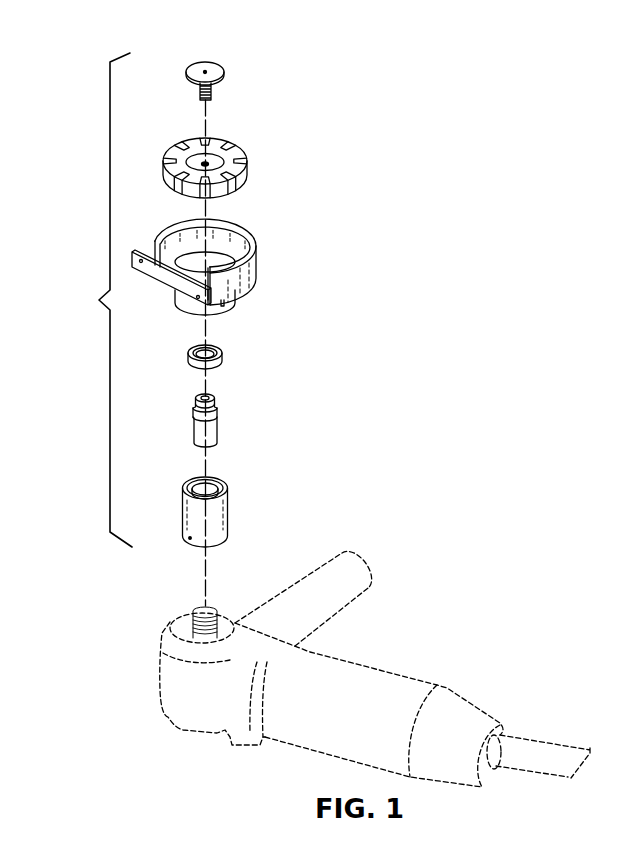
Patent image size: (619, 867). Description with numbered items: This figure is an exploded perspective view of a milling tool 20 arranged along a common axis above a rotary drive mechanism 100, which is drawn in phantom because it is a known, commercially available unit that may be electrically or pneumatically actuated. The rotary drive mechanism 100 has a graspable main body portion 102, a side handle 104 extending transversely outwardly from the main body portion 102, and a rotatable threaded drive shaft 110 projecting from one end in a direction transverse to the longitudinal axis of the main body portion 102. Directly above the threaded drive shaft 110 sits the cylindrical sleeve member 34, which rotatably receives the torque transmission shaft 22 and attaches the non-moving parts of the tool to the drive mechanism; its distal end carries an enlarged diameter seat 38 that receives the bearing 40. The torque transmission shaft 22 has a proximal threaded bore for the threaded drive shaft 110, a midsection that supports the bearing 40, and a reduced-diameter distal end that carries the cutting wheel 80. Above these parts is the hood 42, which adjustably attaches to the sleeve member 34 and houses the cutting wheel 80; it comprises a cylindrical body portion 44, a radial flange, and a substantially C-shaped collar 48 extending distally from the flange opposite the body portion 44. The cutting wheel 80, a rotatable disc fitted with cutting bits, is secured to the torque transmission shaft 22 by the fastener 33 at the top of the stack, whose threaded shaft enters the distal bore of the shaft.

The milling tool 20 is at (89, 300).
The fastener 33 is at (226, 64).
The cutting wheel 80 is at (257, 151).
The hood 42 is at (229, 268).
The C-shaped collar 48 is at (254, 232).
The cylindrical body portion 44 is at (235, 306).
The bearing 40 is at (223, 357).
The torque transmission shaft 22 is at (234, 422).
The enlarged diameter seat 38 is at (199, 481).
The sleeve member 34 is at (217, 502).
The rotary drive mechanism 100 is at (357, 646).
The side handle 104 is at (346, 561).
The main body portion 102 is at (350, 734).
The threaded drive shaft 110 is at (196, 609).